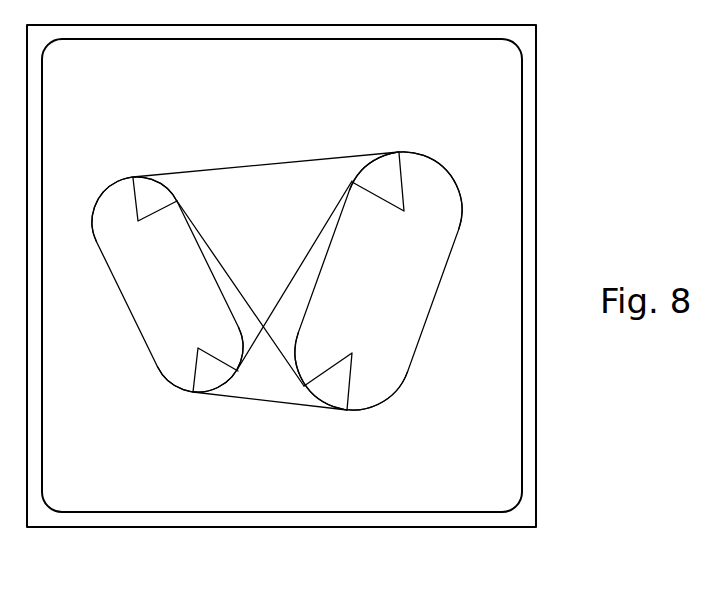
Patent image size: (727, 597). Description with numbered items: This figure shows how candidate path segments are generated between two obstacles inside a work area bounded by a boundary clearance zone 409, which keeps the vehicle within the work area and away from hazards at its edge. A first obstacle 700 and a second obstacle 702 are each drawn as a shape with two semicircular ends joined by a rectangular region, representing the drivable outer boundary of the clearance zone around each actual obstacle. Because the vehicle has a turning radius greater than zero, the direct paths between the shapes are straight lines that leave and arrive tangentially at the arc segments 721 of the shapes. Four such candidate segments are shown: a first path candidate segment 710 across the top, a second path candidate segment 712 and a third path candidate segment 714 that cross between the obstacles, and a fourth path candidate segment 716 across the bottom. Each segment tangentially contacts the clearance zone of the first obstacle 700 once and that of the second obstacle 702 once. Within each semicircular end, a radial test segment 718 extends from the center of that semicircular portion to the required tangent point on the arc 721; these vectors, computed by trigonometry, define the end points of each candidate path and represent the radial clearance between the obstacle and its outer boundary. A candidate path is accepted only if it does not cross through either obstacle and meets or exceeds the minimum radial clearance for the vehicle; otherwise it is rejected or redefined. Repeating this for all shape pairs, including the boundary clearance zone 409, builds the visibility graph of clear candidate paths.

The boundary clearance zone 409 is at (203, 526).
The first obstacle 700 is at (120, 290).
The second obstacle 702 is at (445, 183).
The first path candidate segment 710 is at (240, 166).
The second path candidate segment 712 is at (210, 248).
The third path candidate segment 714 is at (315, 248).
The fourth path candidate segment 716 is at (263, 401).
The radial test segment 718 is at (160, 211).
The arc segments 721 is at (109, 187).